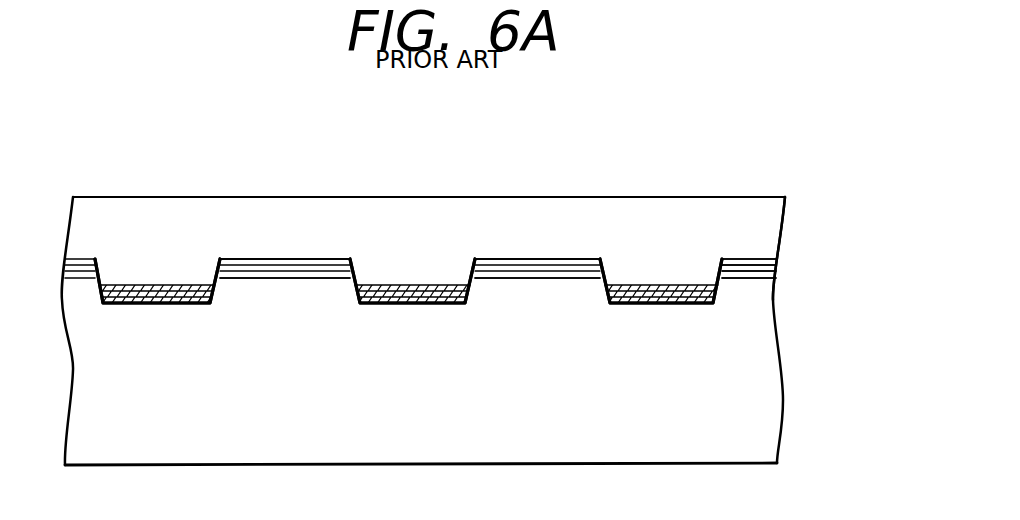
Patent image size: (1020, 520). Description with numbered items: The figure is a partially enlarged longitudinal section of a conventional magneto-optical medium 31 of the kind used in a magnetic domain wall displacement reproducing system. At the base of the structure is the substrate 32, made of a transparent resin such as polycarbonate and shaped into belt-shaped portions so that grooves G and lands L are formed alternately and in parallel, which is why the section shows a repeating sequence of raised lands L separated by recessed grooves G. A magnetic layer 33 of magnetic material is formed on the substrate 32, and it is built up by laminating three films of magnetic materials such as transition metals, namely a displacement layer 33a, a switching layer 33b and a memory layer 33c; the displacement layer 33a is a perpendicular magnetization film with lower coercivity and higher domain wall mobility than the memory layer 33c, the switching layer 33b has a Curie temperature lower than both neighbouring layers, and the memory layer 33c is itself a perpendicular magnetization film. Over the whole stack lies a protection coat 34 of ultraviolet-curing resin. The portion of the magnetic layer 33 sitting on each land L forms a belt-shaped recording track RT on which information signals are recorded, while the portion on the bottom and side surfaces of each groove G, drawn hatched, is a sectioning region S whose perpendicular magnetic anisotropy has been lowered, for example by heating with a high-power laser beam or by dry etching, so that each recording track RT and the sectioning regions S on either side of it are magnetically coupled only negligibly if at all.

The magneto-optical medium 31 is at (750, 150).
The substrate 32 is at (752, 390).
The magnetic layer 33 is at (868, 312).
The displacement layer 33a is at (772, 273).
The switching layer 33b is at (772, 266).
The memory layer 33c is at (772, 259).
The protection coat 34 is at (767, 228).
The groove G is at (168, 270).
The land L is at (250, 292).
The sectioning region S is at (150, 283).
The recording track RT is at (282, 260).